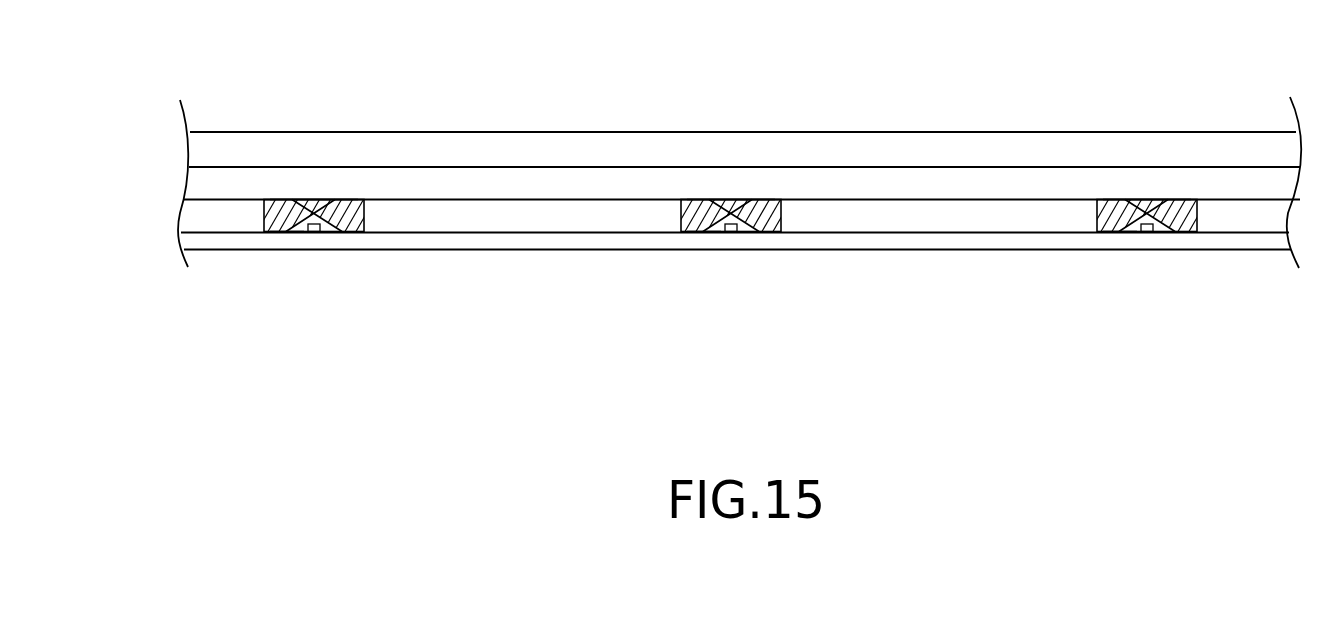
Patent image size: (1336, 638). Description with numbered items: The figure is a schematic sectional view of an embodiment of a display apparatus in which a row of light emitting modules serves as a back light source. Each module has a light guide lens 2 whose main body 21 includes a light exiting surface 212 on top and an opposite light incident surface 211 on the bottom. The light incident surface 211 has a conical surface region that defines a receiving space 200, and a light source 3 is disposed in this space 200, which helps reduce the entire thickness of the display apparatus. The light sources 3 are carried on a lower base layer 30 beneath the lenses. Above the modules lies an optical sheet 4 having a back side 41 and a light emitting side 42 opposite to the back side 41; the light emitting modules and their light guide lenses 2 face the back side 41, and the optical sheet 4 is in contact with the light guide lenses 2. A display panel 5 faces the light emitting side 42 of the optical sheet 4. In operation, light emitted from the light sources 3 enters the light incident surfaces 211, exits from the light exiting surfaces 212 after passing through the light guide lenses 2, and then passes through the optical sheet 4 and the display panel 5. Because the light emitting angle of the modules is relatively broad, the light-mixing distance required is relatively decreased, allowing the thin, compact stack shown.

The light guide lens 2 is at (747, 211).
The main body 21 is at (268, 213).
The light incident surface 211 is at (297, 232).
The light exiting surface 212 is at (350, 199).
The receiving space 200 is at (325, 232).
The light source 3 is at (366, 213).
The circuit board 30 is at (958, 240).
The optical sheet 4 is at (866, 180).
The back side 41 is at (538, 198).
The light emitting side 42 is at (530, 165).
The display panel 5 is at (935, 145).